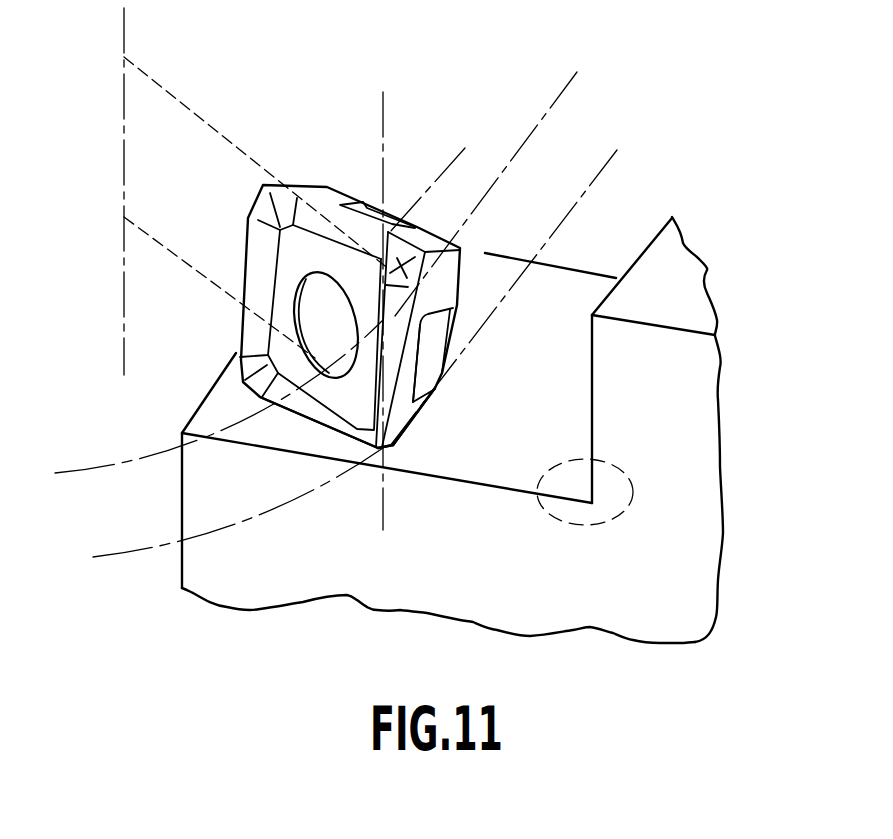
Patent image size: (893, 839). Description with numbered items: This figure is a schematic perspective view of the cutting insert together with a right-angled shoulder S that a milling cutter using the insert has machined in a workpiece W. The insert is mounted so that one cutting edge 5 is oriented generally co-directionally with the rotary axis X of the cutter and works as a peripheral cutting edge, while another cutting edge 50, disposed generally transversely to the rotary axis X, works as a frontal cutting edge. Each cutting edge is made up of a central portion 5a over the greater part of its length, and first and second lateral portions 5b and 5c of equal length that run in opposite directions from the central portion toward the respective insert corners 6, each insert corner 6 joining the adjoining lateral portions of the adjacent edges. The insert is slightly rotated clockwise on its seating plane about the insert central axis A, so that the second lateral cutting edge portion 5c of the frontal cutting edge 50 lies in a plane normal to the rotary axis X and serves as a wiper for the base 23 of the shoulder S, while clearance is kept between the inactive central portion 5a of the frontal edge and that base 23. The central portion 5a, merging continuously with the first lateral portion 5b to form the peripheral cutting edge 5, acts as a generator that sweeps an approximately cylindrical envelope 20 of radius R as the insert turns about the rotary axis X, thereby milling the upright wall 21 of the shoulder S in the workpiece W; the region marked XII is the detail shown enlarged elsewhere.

The cylindrical envelope 20 is at (431, 304).
The cutting edge 5 is at (420, 295).
The central portion 5a is at (413, 353).
The first lateral portion 5b is at (410, 426).
The second lateral portion 5c is at (373, 453).
The insert corner 6 is at (393, 452).
The frontal cutting edge 50 is at (307, 421).
The upright wall 21 is at (592, 407).
The base 23 is at (465, 485).
The workpiece W is at (474, 430).
The shoulder S is at (674, 600).
The insert central axis A is at (383, 138).
The rotary axis X is at (122, 187).
The radius R is at (192, 112).
The detail region XII is at (633, 498).